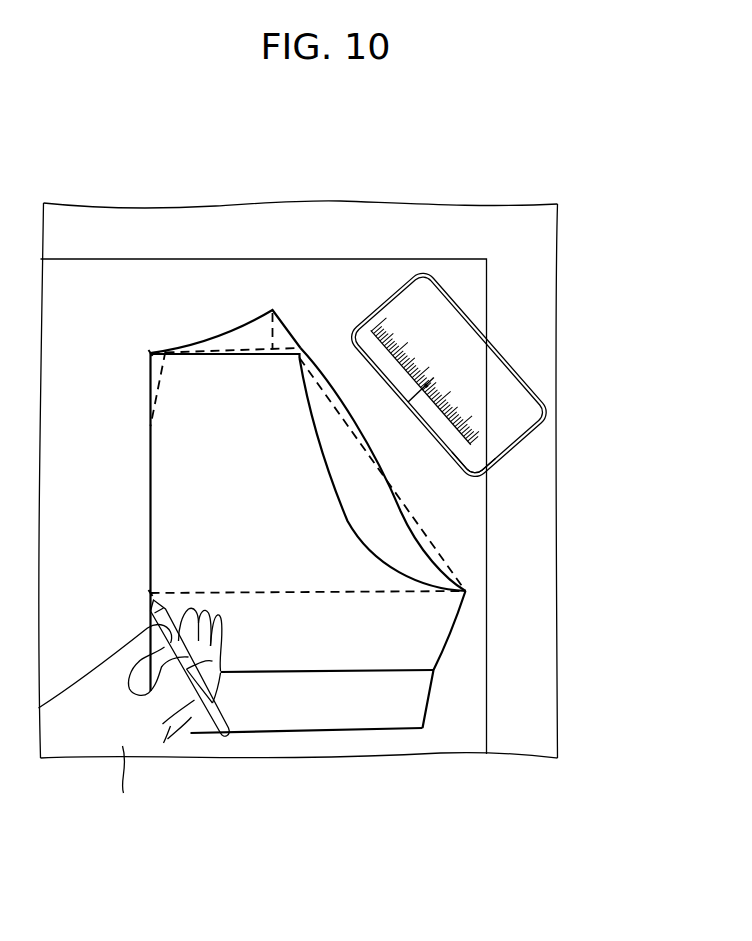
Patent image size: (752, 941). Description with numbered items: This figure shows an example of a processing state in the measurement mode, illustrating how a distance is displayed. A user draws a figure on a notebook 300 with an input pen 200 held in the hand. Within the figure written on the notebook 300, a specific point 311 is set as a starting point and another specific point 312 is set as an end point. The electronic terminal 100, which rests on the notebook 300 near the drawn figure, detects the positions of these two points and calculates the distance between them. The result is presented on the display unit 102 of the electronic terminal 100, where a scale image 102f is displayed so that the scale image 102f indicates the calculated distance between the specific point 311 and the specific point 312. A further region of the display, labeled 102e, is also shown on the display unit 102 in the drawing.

The electronic terminal 100 is at (532, 402).
The display unit 102 is at (435, 305).
The scale image 102f is at (463, 347).
The display region 102e is at (442, 445).
The input pen 200 is at (192, 667).
The notebook 300 is at (475, 637).
The specific point 311 is at (147, 348).
The specific point 312 is at (153, 592).